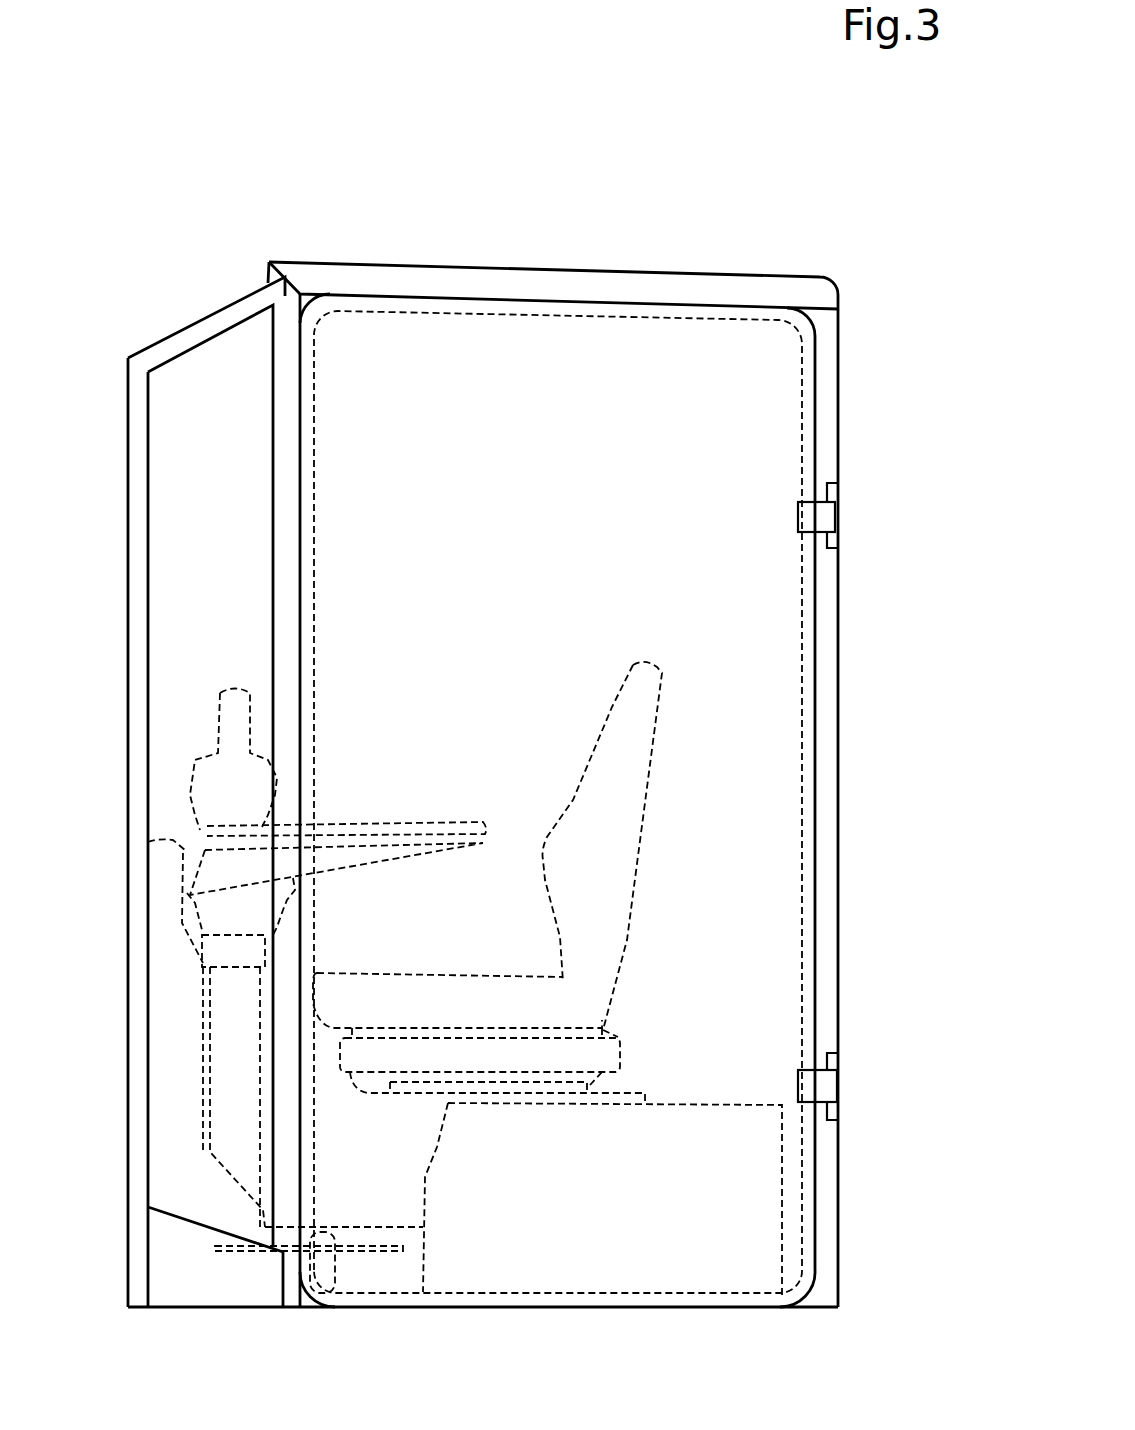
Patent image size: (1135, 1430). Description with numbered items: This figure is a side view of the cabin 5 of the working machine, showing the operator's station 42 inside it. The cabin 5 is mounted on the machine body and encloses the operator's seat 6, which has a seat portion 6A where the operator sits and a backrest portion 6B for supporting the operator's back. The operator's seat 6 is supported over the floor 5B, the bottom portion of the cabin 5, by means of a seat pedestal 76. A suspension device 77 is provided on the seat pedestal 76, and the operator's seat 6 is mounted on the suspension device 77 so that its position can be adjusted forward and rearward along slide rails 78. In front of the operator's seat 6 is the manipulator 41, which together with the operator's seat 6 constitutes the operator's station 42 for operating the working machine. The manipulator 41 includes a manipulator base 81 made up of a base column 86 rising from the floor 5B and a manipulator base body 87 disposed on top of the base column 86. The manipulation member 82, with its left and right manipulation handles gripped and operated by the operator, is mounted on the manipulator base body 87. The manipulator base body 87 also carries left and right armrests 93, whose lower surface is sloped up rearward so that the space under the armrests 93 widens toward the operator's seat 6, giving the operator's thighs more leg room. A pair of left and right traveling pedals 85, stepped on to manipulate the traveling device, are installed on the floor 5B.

The cabin 5 is at (587, 213).
The floor 5B is at (536, 1284).
The operator's seat 6 is at (520, 784).
The seat portion 6A is at (493, 975).
The backrest portion 6B is at (660, 723).
The manipulator 41 is at (383, 726).
The operator's station 42 is at (507, 673).
The seat pedestal 76 is at (757, 1105).
The suspension device 77 is at (623, 1047).
The slide rails 78 is at (448, 1102).
The manipulator base 81 is at (331, 791).
The manipulation member 82 is at (238, 690).
The traveling pedals 85 is at (267, 1253).
The base column 86 is at (262, 978).
The manipulator base body 87 is at (185, 848).
The armrests 93 is at (390, 822).